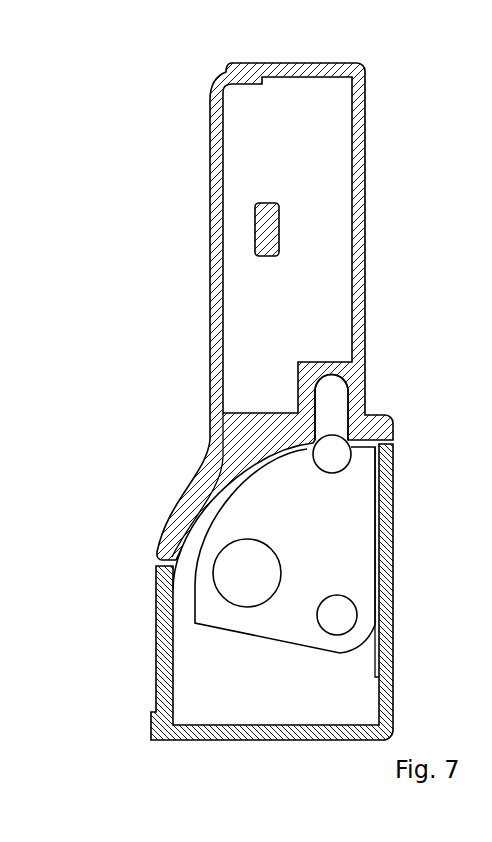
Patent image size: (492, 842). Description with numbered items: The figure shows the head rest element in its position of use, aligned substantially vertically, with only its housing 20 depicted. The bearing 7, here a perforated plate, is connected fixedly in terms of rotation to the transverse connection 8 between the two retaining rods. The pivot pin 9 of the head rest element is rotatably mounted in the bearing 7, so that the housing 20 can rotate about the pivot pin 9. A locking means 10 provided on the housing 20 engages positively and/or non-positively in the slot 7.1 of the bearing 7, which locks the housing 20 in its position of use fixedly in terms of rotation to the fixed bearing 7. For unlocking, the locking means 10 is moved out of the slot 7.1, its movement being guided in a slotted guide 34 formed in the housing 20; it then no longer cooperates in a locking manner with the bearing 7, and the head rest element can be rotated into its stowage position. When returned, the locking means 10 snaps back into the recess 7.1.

The housing 20 is at (320, 132).
The slotted guide 34 is at (349, 398).
The locking means 10 is at (340, 452).
The slot 7.1 is at (342, 466).
The bearing 7 is at (350, 537).
The transverse connection 8 is at (245, 579).
The pivot pin 9 is at (343, 617).